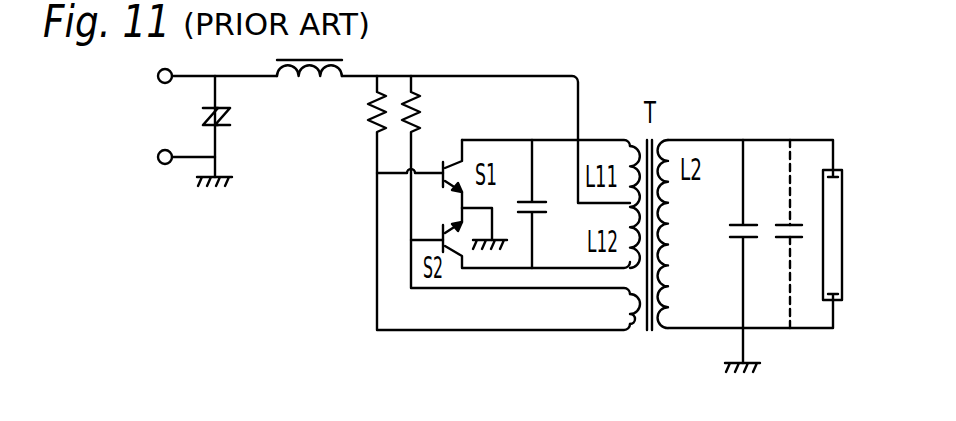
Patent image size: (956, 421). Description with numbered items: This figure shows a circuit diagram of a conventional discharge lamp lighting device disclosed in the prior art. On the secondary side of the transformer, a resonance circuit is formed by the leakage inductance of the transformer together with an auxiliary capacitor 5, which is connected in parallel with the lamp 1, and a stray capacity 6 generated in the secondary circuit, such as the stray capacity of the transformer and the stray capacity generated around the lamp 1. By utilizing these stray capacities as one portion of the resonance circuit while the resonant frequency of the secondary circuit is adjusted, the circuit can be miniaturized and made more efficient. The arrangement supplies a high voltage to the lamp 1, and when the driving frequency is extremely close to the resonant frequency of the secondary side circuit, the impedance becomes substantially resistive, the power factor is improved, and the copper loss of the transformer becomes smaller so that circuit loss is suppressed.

The lamp 1 is at (848, 266).
The auxiliary capacitor 5 is at (737, 240).
The stray capacity 6 is at (790, 240).